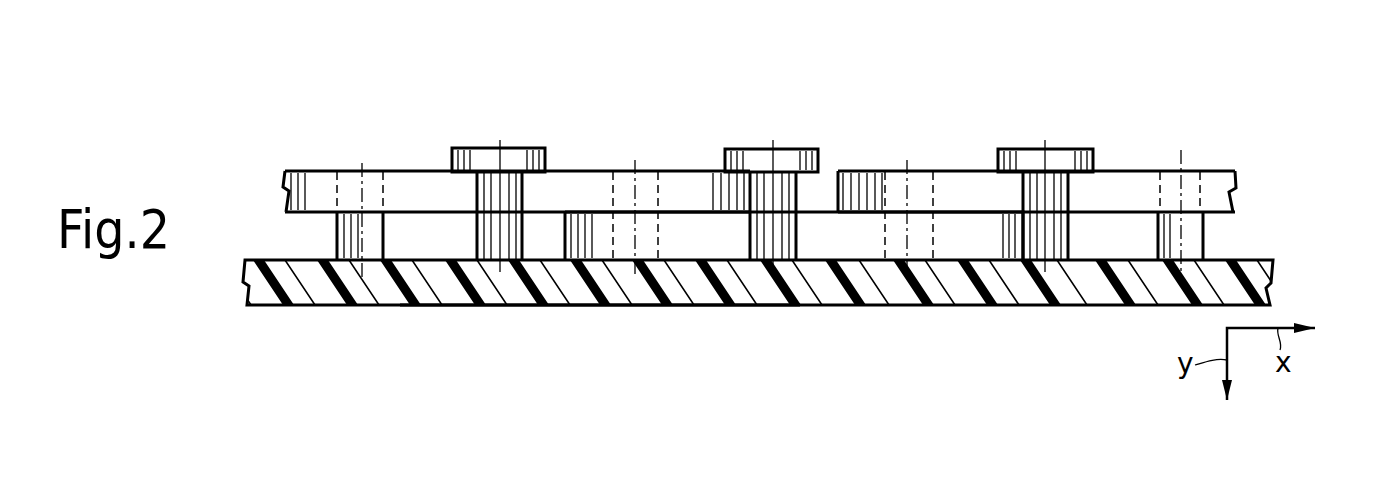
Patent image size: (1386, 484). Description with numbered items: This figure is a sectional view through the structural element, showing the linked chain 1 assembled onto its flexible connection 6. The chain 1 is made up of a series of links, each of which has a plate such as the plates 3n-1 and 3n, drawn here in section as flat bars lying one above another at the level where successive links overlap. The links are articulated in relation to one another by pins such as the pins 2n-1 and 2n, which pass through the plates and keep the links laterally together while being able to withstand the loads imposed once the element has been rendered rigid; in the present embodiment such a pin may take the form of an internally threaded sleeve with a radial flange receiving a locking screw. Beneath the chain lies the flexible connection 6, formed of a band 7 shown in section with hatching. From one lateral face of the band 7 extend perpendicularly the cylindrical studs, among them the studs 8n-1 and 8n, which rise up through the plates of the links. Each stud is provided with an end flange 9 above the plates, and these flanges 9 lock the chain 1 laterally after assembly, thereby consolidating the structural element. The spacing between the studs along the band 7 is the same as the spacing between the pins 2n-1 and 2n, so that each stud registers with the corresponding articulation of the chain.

The linked chain 1 is at (724, 241).
The pin 2n-1 is at (345, 238).
The pin 2n is at (647, 188).
The plate 3n-1 is at (398, 188).
The plate 3n is at (688, 237).
The flexible connection 6 is at (598, 310).
The band 7 is at (312, 292).
The cylindrical stud 8n-1 is at (503, 247).
The cylindrical stud 8n is at (780, 243).
The end flange 9 is at (512, 160).